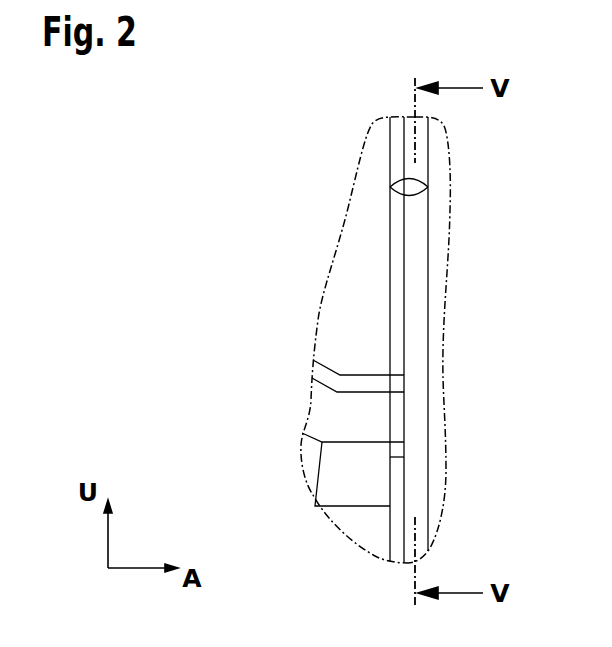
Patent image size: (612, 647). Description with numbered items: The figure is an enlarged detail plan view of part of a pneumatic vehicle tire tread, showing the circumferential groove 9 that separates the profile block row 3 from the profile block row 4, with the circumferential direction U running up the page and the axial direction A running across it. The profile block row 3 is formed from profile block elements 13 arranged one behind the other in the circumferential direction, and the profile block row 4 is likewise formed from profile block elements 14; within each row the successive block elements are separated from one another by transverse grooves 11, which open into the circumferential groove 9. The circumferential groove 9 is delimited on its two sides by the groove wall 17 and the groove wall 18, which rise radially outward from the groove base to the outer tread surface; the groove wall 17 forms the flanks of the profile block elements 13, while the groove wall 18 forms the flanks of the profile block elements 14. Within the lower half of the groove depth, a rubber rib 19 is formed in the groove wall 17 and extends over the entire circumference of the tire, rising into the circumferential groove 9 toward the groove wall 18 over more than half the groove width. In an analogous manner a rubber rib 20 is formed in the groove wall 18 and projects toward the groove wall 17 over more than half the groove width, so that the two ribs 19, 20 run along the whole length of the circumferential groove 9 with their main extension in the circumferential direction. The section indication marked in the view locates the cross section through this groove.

The profile block row 3 is at (372, 153).
The profile block row 4 is at (440, 151).
The circumferential groove 9 is at (413, 113).
The transverse groove 11 is at (347, 415).
The profile block element 13 is at (373, 234).
The profile block element 14 is at (438, 264).
The groove wall 17 is at (429, 181).
The groove wall 18 is at (389, 190).
The rubber rib 19 is at (397, 233).
The rubber rib 20 is at (413, 380).